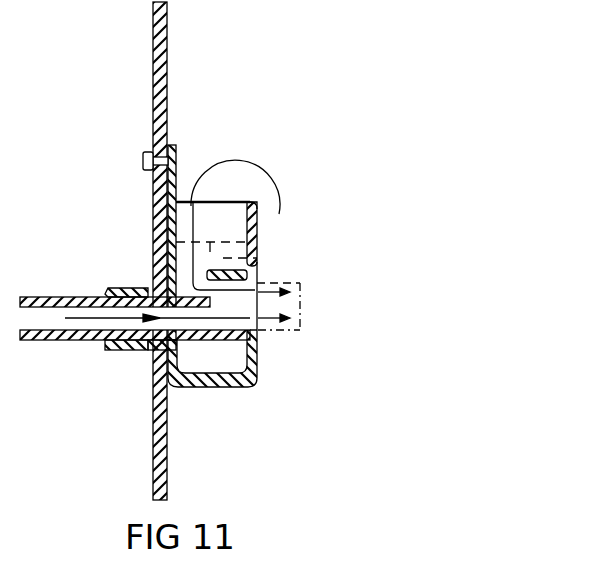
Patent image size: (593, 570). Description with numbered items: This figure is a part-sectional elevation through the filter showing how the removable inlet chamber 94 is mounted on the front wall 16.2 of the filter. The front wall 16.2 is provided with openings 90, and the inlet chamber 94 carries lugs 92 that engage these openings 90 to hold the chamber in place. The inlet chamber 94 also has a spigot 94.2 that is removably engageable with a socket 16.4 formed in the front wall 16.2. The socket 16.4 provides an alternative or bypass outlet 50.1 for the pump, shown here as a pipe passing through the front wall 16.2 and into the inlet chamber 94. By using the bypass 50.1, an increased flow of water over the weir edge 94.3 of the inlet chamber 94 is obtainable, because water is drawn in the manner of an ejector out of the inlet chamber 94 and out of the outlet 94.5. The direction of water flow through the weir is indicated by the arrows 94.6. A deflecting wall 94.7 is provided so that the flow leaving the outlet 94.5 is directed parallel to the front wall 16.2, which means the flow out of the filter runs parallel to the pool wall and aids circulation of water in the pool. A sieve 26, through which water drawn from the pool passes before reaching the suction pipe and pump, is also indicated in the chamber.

The front wall 16.2 is at (168, 88).
The openings 90 is at (170, 135).
The lugs 92 is at (140, 162).
The inlet chamber 94 is at (268, 374).
The spigot 94.2 is at (147, 350).
The weir edge 94.3 is at (257, 204).
The outlet 94.5 is at (258, 305).
The arrows 94.6 is at (263, 172).
The deflecting wall 94.7 is at (300, 283).
The sieve 26 is at (257, 258).
The bypass outlet 50.1 is at (80, 297).
The socket 16.4 is at (95, 348).